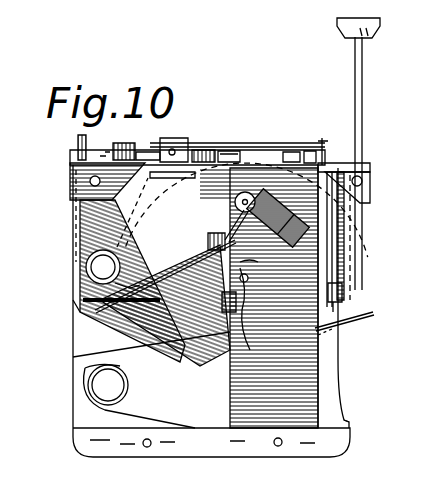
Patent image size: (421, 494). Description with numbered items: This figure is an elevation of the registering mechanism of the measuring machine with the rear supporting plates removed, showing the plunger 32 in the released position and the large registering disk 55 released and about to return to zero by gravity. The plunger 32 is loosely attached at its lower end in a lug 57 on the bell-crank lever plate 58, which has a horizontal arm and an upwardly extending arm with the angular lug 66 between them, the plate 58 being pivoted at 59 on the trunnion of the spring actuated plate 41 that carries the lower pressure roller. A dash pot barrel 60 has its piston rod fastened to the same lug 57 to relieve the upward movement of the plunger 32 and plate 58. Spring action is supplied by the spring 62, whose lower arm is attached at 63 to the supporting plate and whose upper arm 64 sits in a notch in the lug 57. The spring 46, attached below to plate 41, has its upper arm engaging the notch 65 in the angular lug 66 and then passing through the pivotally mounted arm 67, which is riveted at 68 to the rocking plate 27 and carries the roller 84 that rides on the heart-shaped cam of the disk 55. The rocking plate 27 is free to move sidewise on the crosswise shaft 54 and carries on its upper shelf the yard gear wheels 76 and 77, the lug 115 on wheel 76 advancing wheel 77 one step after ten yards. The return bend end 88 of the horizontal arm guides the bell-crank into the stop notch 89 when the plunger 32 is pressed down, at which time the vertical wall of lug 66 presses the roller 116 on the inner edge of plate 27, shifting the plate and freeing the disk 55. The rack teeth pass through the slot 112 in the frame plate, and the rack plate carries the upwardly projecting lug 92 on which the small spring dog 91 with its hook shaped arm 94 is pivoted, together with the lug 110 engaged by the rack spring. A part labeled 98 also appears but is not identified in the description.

The rocking plate 27 is at (340, 372).
The plunger 32 is at (364, 113).
The spring actuated plate 41 is at (128, 284).
The actuating spring 46 is at (163, 268).
The shaft 54 is at (300, 360).
The registering disk 55 is at (352, 258).
The lug 57 is at (371, 316).
The bell-crank lever plate 58 is at (108, 322).
The pivot 59 is at (76, 318).
The dash pot barrel 60 is at (334, 240).
The spring 62 is at (186, 340).
The attachment point 63 is at (196, 426).
The upper arm 64 is at (330, 333).
The notch 65 is at (230, 222).
The angular lug 66 is at (217, 240).
The pivotally mounted arm 67 is at (285, 232).
The pivot rivet 68 is at (322, 218).
The first higher numeral gear wheel 76 is at (242, 147).
The second higher numeral gear wheel 77 is at (294, 146).
The roller 84 is at (234, 203).
The return bend end 88 is at (360, 297).
The stop notch 89 is at (350, 420).
The spring dog 91 is at (146, 153).
The upwardly projecting lug 92 is at (198, 150).
The hook shaped arm 94 is at (122, 145).
The knob 98 is at (173, 142).
The lug 110 is at (268, 272).
The slot 112 is at (168, 178).
The lug 115 is at (230, 151).
The roller 116 is at (225, 305).